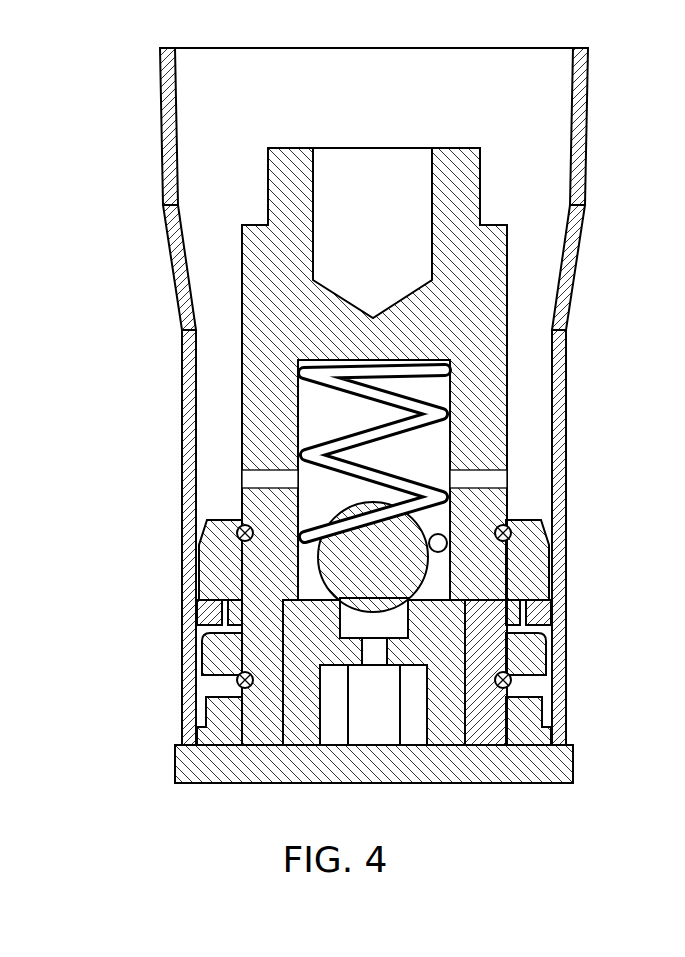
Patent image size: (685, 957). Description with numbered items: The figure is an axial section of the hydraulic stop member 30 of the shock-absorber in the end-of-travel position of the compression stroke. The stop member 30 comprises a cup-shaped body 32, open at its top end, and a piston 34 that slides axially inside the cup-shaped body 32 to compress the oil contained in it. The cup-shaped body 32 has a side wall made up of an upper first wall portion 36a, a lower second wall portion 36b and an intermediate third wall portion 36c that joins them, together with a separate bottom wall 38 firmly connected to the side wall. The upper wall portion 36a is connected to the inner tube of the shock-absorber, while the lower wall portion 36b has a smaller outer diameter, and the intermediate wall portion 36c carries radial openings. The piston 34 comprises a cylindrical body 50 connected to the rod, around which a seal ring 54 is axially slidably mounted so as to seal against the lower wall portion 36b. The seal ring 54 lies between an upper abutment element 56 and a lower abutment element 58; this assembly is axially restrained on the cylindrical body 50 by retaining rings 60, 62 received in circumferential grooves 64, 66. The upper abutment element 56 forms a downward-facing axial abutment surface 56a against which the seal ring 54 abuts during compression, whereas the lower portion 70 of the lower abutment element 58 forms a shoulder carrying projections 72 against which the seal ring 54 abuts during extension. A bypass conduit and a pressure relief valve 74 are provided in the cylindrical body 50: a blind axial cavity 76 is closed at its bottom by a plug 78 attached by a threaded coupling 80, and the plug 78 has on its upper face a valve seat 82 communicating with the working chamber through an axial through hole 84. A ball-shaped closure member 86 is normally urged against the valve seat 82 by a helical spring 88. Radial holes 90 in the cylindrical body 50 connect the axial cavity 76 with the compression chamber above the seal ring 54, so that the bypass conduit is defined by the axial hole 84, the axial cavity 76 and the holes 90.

The hydraulic stop member 30 is at (371, 450).
The cup-shaped body 32 is at (384, 450).
The piston 34 is at (512, 445).
The first wall portion 36a is at (590, 122).
The second wall portion 36b is at (195, 690).
The third wall portion 36c is at (575, 290).
The bottom wall 38 is at (545, 780).
The cylindrical body 50 is at (377, 446).
The seal ring 54 is at (430, 634).
The upper abutment element 56 is at (550, 580).
The axial abutment surface 56a is at (550, 607).
The lower abutment element 58 is at (553, 655).
The retaining ring 60 is at (212, 540).
The retaining ring 62 is at (240, 683).
The circumferential groove 64 is at (512, 532).
The circumferential groove 66 is at (542, 703).
The lower portion 70 is at (510, 683).
The projections 72 is at (543, 633).
The pressure relief valve 74 is at (310, 566).
The blind axial cavity 76 is at (374, 441).
The plug 78 is at (285, 717).
The threaded coupling 80 is at (465, 690).
The valve seat 82 is at (343, 617).
The axial through hole 84 is at (363, 650).
The closure member 86 is at (447, 540).
The spring 88 is at (418, 405).
The holes 90 is at (240, 480).